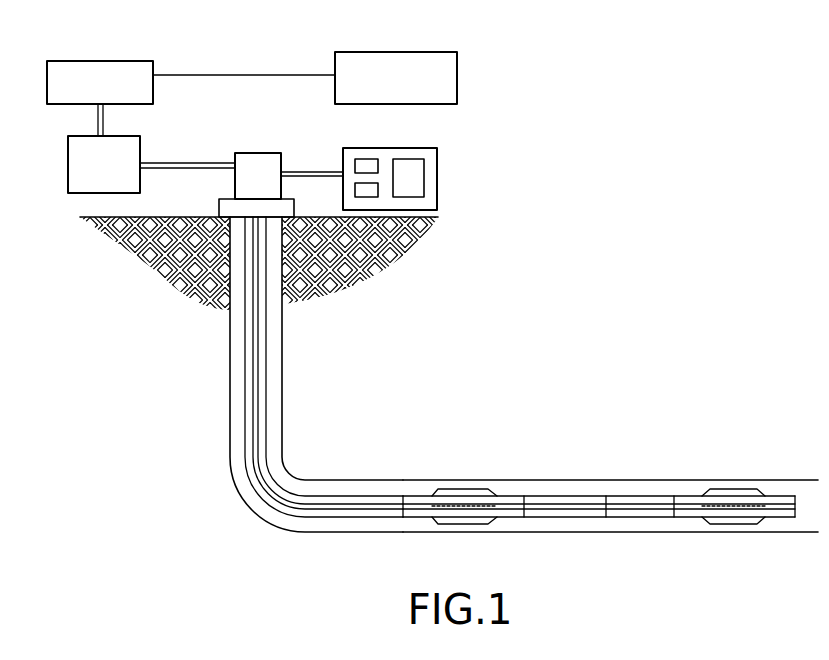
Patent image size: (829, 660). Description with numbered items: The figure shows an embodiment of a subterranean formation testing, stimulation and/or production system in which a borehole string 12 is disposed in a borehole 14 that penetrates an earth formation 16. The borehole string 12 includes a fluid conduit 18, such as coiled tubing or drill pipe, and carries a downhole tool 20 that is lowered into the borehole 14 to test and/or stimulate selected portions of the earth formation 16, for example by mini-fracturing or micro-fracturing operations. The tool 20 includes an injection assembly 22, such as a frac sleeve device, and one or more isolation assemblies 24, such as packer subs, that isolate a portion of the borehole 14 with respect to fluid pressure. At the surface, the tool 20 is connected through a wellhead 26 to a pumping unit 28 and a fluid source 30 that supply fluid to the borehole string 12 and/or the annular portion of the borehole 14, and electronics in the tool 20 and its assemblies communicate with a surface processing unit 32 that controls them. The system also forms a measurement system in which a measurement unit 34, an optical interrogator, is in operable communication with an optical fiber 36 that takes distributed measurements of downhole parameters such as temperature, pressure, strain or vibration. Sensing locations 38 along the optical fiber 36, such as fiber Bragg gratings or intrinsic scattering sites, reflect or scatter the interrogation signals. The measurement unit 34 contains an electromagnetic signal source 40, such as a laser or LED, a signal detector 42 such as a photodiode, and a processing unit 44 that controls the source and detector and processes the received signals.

The borehole string 12 is at (278, 426).
The borehole 14 is at (238, 457).
The earth formation 16 is at (172, 287).
The fluid conduit 18 is at (252, 391).
The downhole tool 20 is at (662, 474).
The injection assembly 22 is at (599, 508).
The isolation assembly 24 is at (450, 494).
The wellhead 26 is at (263, 162).
The pumping unit 28 is at (77, 160).
The fluid source 30 is at (98, 72).
The surface processing unit 32 is at (396, 72).
The measurement unit 34 is at (438, 197).
The optical fiber 36 is at (588, 504).
The sensing location 38 is at (477, 504).
The electromagnetic signal source 40 is at (363, 165).
The signal detector 42 is at (361, 190).
The processing unit 44 is at (417, 173).